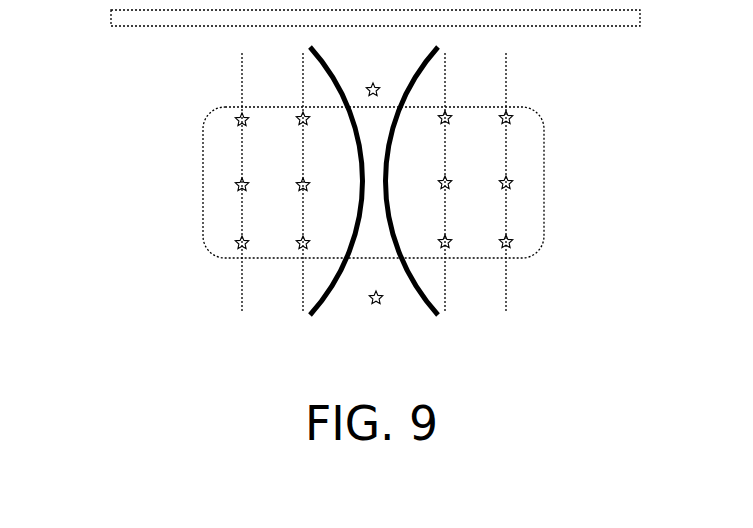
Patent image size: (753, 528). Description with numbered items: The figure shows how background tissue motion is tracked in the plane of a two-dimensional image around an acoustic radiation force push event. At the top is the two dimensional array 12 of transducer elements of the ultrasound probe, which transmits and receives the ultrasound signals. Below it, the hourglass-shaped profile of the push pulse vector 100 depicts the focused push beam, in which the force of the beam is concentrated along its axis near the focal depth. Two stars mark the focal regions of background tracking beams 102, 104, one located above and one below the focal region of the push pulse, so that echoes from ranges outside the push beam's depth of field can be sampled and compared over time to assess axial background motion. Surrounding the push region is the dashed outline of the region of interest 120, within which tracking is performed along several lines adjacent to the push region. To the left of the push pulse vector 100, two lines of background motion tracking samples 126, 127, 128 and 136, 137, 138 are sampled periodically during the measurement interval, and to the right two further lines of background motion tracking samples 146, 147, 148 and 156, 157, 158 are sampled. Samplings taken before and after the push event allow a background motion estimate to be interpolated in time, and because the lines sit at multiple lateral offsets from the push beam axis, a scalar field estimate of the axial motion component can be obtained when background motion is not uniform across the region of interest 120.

The two dimensional array 12 is at (111, 15).
The push pulse vector 100 is at (314, 318).
The background tracking beam focal region 102 is at (374, 83).
The background tracking beam focal region 104 is at (377, 305).
The region of interest 120 is at (544, 153).
The background motion tracking sample 126 is at (236, 119).
The background motion tracking sample 127 is at (236, 185).
The background motion tracking sample 128 is at (236, 243).
The background motion tracking sample 136 is at (298, 113).
The background motion tracking sample 137 is at (298, 179).
The background motion tracking sample 138 is at (298, 237).
The background motion tracking sample 146 is at (450, 112).
The background motion tracking sample 147 is at (450, 177).
The background motion tracking sample 148 is at (450, 236).
The background motion tracking sample 156 is at (512, 118).
The background motion tracking sample 157 is at (512, 183).
The background motion tracking sample 158 is at (512, 242).